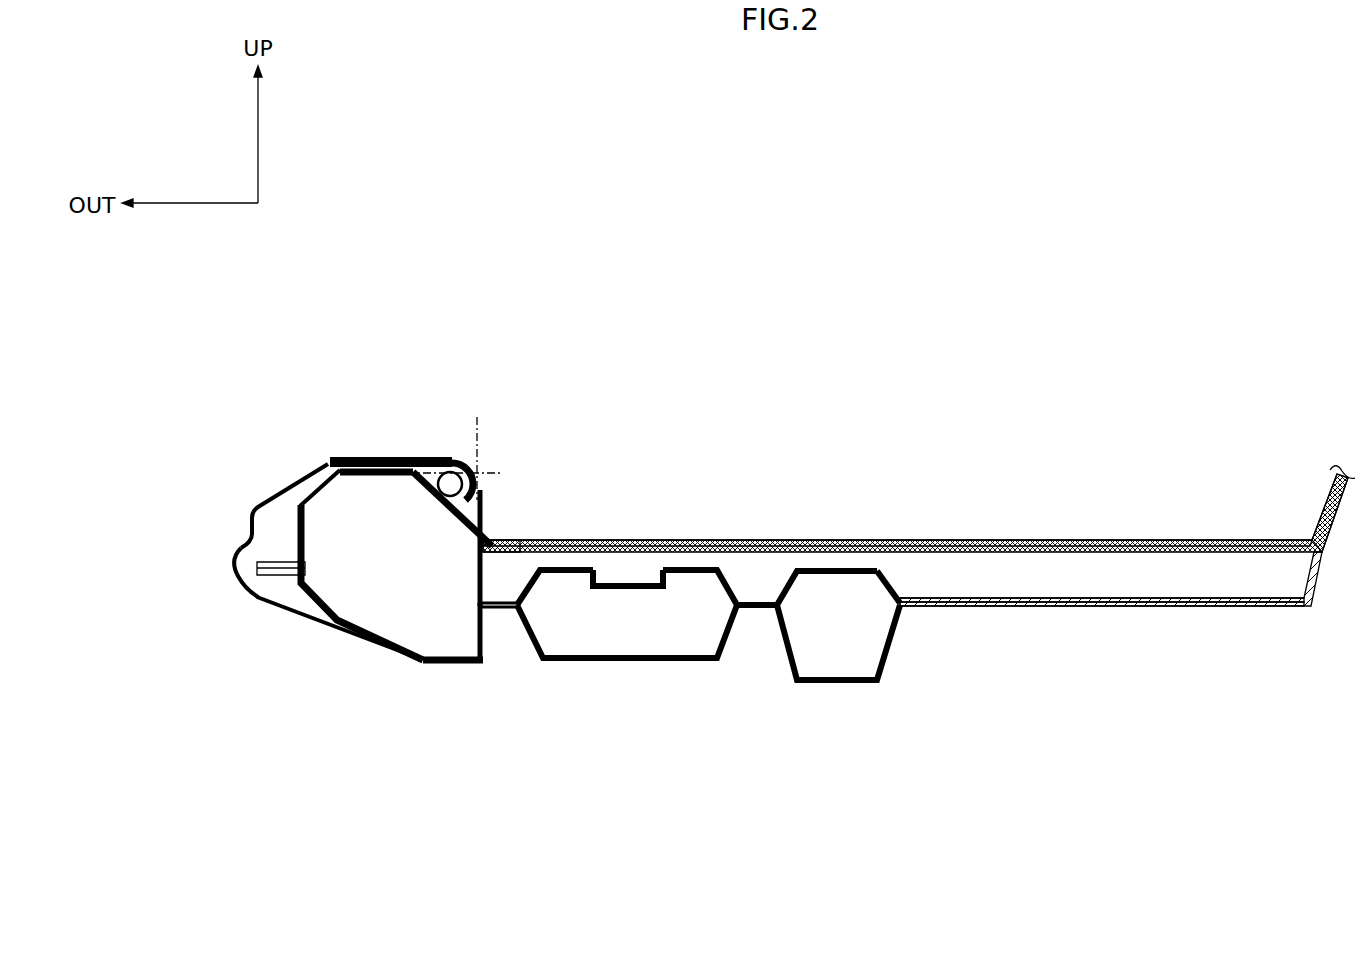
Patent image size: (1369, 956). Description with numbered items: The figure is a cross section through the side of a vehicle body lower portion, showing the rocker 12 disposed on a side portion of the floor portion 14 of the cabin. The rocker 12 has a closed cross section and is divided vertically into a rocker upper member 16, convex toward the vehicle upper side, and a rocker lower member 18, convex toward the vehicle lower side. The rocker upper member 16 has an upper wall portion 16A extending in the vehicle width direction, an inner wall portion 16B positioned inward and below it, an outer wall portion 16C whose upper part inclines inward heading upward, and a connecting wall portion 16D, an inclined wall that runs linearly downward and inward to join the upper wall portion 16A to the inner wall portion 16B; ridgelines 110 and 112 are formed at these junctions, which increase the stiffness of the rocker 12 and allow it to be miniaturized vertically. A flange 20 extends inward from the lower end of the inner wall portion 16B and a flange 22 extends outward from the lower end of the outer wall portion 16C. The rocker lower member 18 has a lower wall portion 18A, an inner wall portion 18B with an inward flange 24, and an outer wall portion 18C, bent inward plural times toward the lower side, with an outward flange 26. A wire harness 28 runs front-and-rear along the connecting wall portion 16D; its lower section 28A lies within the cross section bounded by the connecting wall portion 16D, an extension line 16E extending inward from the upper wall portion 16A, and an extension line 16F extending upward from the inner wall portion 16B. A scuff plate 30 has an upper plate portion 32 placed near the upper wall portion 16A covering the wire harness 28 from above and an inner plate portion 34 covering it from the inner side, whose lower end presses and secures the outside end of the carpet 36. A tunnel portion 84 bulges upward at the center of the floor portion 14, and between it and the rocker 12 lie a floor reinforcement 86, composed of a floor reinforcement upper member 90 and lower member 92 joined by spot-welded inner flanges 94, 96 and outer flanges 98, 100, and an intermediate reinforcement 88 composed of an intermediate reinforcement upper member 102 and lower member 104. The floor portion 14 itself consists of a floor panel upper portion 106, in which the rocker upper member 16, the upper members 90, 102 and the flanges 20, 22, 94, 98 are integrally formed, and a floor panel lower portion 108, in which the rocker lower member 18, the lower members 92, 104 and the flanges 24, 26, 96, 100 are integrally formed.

The rocker 12 is at (133, 516).
The floor portion 14 is at (1125, 607).
The rocker upper member 16 is at (253, 522).
The upper wall portion 16A is at (398, 456).
The inner wall portion 16B is at (510, 580).
The outer wall portion 16C is at (273, 507).
The connecting wall portion 16D is at (435, 531).
The extension line 16E is at (490, 481).
The extension line 16F is at (480, 456).
The rocker lower member 18 is at (275, 612).
The lower wall portion 18A is at (433, 667).
The inner wall portion 18B is at (477, 640).
The outer wall portion 18C is at (307, 632).
The flange 20 is at (513, 612).
The flange 22 is at (255, 560).
The flange 24 is at (495, 612).
The flange 26 is at (243, 590).
The wire harness 28 is at (453, 458).
The section of the wire harness 28A is at (407, 510).
The scuff plate 30 is at (353, 455).
The upper plate portion 32 is at (373, 455).
The inner plate portion 34 is at (497, 500).
The carpet 36 is at (1120, 540).
The tunnel portion 84 is at (1303, 570).
The floor reinforcement 86 is at (961, 432).
The intermediate reinforcement 88 is at (796, 428).
The floor reinforcement upper member 90 is at (890, 638).
The floor reinforcement lower member 92 is at (900, 636).
The flange 94 is at (927, 595).
The flange 96 is at (927, 623).
The flange 98 is at (790, 590).
The flange 100 is at (760, 612).
The intermediate reinforcement upper member 102 is at (693, 560).
The intermediate reinforcement lower member 104 is at (748, 598).
The floor panel upper portion 106 is at (637, 585).
The floor panel lower portion 108 is at (640, 665).
The ridgeline 110 is at (421, 457).
The ridgeline 112 is at (515, 535).